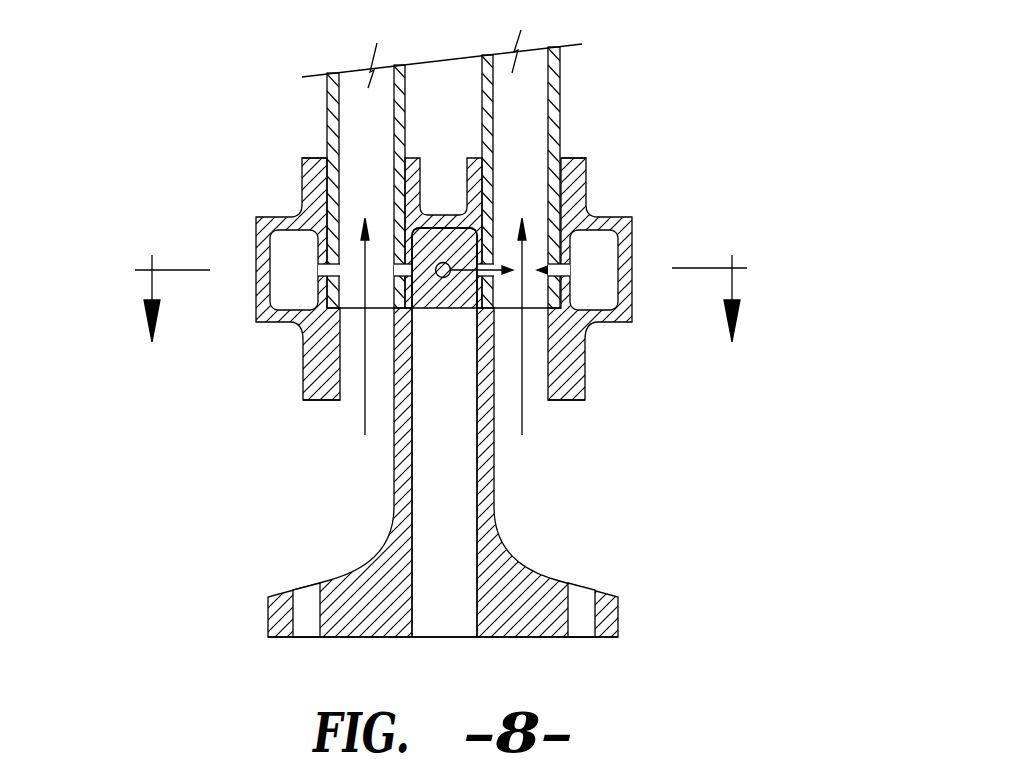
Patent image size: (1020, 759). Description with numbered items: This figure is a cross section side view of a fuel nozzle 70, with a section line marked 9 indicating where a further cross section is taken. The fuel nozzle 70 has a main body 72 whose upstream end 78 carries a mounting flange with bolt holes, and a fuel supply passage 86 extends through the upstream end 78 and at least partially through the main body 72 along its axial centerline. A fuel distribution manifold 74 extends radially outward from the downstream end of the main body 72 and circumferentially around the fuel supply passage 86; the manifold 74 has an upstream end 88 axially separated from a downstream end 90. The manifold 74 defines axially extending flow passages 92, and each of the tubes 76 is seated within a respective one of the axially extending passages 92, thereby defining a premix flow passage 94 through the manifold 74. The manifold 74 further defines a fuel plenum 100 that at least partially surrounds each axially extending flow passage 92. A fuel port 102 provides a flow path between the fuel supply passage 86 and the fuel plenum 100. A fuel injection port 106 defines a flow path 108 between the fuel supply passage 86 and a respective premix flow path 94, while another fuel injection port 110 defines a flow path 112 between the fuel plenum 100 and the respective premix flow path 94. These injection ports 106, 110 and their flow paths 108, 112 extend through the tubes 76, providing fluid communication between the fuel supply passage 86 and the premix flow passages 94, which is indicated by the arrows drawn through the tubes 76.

The fuel nozzle 70 is at (356, 47).
The main body 72 is at (518, 578).
The fuel distribution manifold 74 is at (617, 217).
The tubes 76 is at (327, 118).
The upstream end 78 is at (528, 637).
The fuel supply passage 86 is at (442, 625).
The upstream end 88 is at (318, 403).
The downstream end 90 is at (310, 157).
The axially extending flow passage 92 is at (350, 358).
The premix flow passage 94 is at (362, 418).
The fuel plenum 100 is at (607, 255).
The fuel port 102 is at (443, 262).
The fuel injection port 106 is at (497, 277).
The flow path 108 is at (445, 279).
The fuel injection port 110 is at (573, 273).
The flow path 112 is at (572, 267).
The section line 9- 9 is at (439, 313).